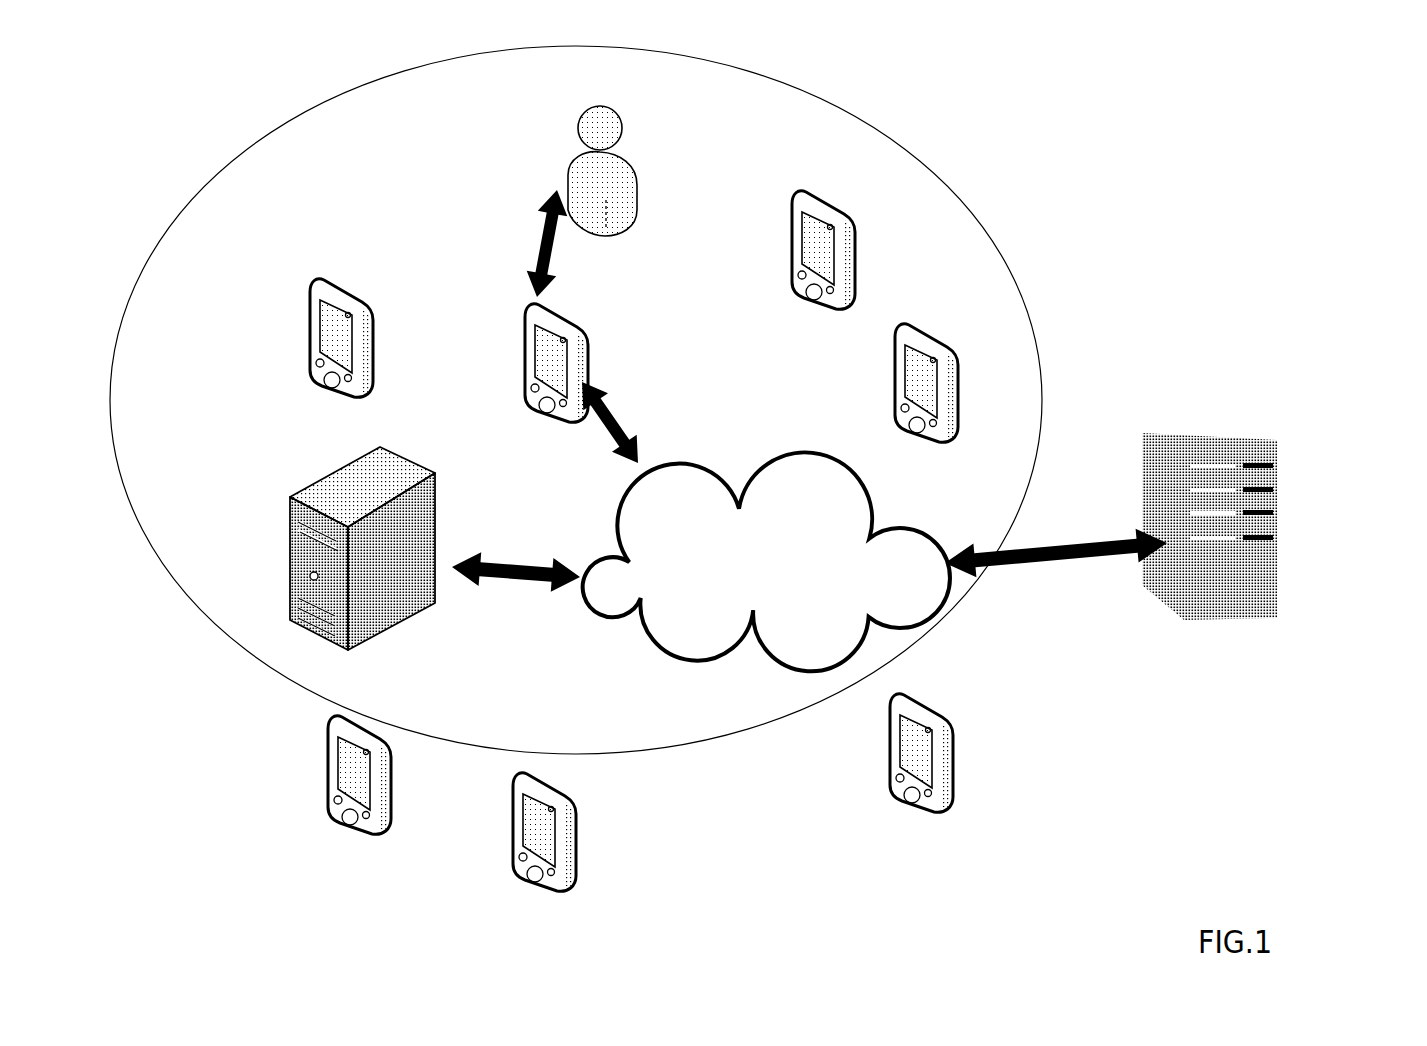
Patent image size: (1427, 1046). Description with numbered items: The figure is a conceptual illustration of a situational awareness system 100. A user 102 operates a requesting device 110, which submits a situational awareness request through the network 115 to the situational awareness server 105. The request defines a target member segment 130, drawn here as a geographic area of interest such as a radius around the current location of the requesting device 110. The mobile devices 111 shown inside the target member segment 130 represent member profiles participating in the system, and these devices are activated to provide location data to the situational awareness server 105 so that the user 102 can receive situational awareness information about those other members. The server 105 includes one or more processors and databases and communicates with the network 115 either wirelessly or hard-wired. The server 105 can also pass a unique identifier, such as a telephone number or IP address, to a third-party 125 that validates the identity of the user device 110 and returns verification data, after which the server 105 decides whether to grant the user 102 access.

The situational awareness system 100 is at (1208, 190).
The user 102 is at (664, 153).
The situational awareness server 105 is at (298, 473).
The requesting device 110 is at (580, 330).
The other members' mobile devices 111 is at (308, 333).
The network 115 is at (766, 561).
The third-party 125 is at (1277, 493).
The target member segment 130 is at (1038, 350).